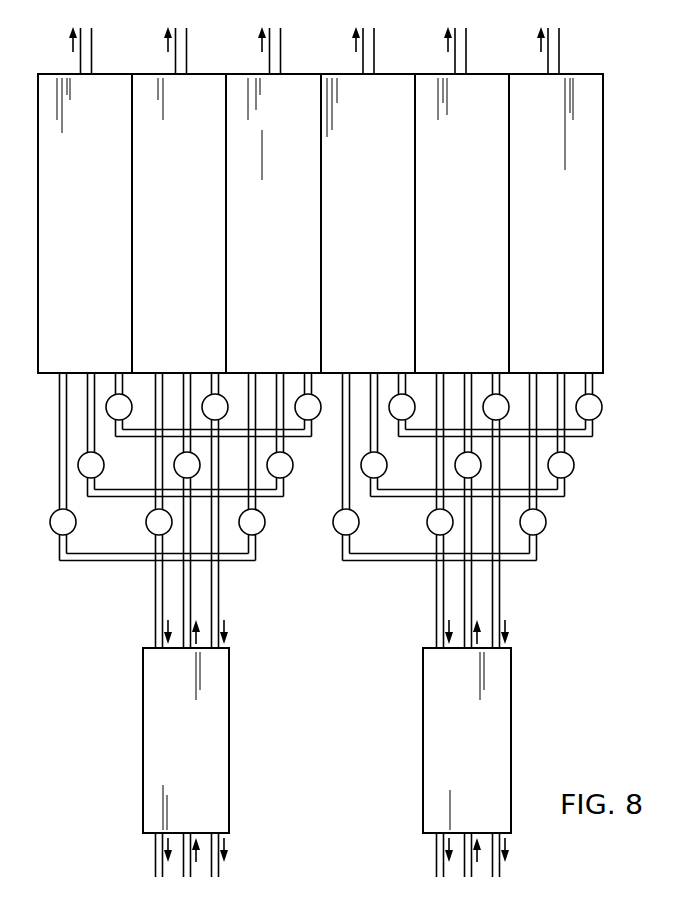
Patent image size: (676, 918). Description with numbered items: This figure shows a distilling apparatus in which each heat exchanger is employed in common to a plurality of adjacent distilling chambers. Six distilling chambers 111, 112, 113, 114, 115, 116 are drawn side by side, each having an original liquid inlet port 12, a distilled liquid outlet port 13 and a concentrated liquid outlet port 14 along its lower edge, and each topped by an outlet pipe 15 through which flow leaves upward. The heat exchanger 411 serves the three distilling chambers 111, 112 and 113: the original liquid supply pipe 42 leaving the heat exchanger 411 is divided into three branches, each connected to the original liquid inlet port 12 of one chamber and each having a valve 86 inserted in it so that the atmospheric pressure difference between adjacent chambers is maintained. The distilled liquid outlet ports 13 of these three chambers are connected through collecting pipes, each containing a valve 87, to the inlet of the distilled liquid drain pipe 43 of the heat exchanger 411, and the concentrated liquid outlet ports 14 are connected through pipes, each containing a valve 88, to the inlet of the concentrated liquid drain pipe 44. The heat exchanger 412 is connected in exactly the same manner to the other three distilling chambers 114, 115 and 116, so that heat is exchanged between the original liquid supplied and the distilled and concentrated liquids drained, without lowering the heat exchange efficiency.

The outlet pipe 15 is at (572, 44).
The distilling chamber 116 is at (99, 227).
The distilling chamber 115 is at (193, 227).
The distilling chamber 114 is at (287, 227).
The distilling chamber 113 is at (382, 227).
The distilling chamber 112 is at (476, 227).
The distilling chamber 111 is at (570, 227).
The distilled liquid outlet port 13 is at (531, 383).
The original liquid inlet port 12 is at (558, 373).
The concentrated liquid outlet port 14 is at (588, 383).
The valve 88 is at (611, 415).
The valve 86 is at (582, 477).
The valve 87 is at (556, 535).
The original liquid supply pipe 42 is at (463, 862).
The distilled liquid drain pipe 43 is at (436, 867).
The concentrated liquid drain pipe 44 is at (516, 870).
The heat exchanger 412 is at (202, 753).
The heat exchanger 411 is at (482, 753).